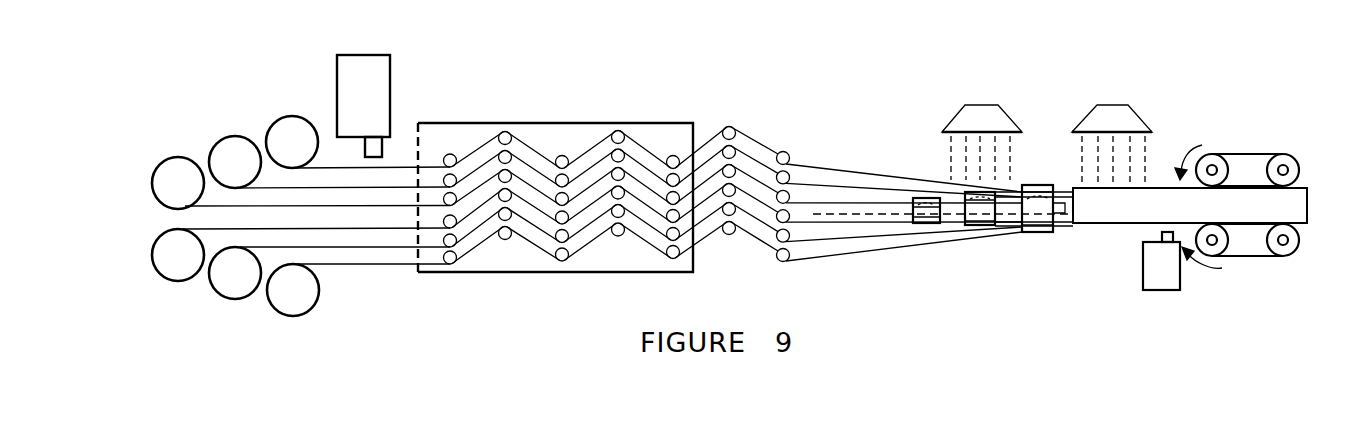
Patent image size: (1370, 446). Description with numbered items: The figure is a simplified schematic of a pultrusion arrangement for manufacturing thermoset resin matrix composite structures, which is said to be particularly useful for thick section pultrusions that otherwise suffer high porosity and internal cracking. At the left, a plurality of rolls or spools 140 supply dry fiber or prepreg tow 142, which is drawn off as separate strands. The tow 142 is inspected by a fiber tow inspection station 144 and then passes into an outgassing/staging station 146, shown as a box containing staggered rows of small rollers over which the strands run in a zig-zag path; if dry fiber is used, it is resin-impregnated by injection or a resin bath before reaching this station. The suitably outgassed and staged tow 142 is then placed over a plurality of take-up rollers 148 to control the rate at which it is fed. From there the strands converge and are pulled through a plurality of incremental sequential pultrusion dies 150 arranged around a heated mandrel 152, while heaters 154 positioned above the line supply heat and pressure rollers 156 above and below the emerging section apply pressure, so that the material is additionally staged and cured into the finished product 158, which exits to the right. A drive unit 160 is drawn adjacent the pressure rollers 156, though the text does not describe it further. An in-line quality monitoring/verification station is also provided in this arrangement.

The rolls or spools 140 is at (293, 313).
The tow 142 is at (335, 265).
The fiber tow inspection station 144 is at (378, 104).
The outgassing/staging station 146 is at (553, 123).
The take-up rollers 148 is at (730, 127).
The incremental sequential pultrusion dies 150 is at (1032, 233).
The heated mandrel 152 is at (947, 222).
The heaters 154 is at (1140, 103).
The pressure rollers 156 is at (1255, 153).
The product 158 is at (1158, 187).
The drive motor 160 is at (1160, 290).